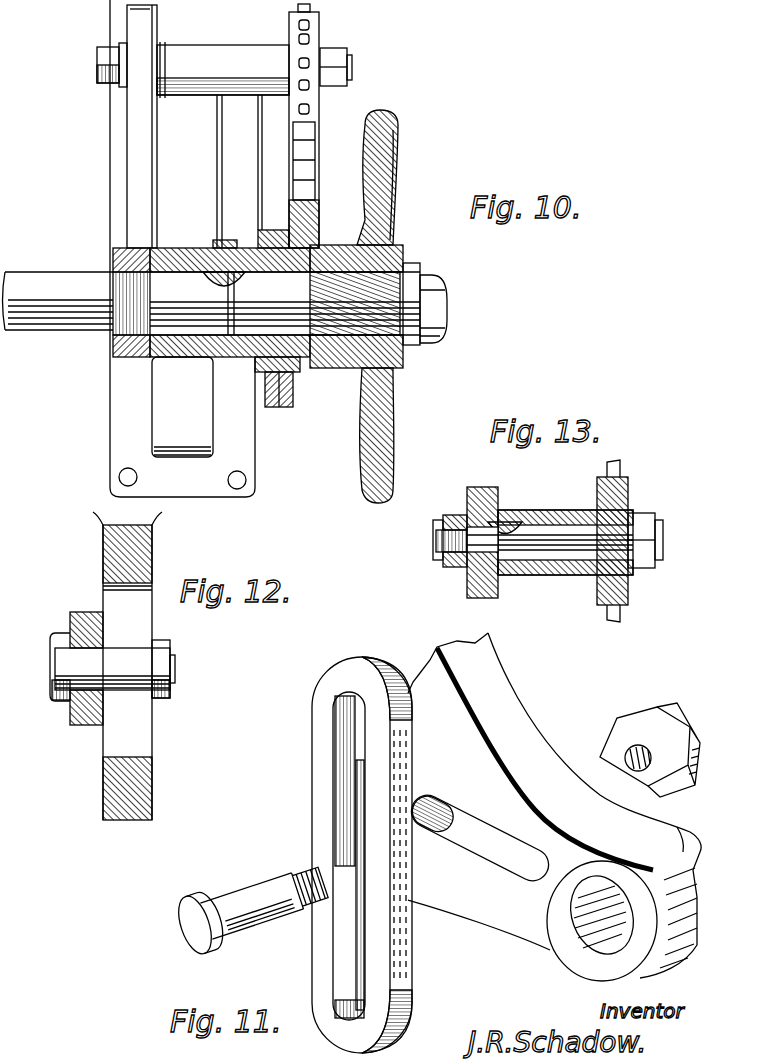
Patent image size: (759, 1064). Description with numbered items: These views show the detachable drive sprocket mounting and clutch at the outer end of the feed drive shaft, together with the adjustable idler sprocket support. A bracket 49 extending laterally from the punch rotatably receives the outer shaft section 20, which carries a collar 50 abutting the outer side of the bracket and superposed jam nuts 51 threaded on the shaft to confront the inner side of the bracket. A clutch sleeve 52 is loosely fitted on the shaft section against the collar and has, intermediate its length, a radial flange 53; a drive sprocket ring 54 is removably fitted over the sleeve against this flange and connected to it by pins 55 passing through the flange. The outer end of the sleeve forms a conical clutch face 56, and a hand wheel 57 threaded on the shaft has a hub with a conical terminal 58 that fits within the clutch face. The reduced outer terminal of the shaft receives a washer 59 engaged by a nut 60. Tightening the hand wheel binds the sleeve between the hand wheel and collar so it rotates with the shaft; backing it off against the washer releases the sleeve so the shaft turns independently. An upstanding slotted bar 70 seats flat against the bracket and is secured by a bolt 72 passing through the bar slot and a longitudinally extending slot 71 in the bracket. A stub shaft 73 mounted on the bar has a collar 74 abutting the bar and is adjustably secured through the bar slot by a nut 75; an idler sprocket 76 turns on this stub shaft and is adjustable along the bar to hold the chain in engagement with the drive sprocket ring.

In FIG. 10, the outer shaft section 20 is at (68, 325).
In FIG. 10, the bracket 49 is at (170, 188).
In FIG. 11, the bracket 49 is at (535, 732).
In FIG. 12, the bracket 49 is at (145, 795).
In FIG. 10, the collar 50 is at (232, 246).
In FIG. 10, the jam nuts 51 is at (140, 345).
In FIG. 10, the clutch sleeve 52 is at (240, 355).
In FIG. 10, the radial flange 53 is at (268, 236).
In FIG. 10, the drive sprocket ring 54 is at (318, 228).
In FIG. 10, the pins 55 is at (277, 240).
In FIG. 10, the conical clutch face 56 is at (325, 375).
In FIG. 10, the hand wheel 57 is at (395, 195).
In FIG. 10, the conical terminal 58 is at (350, 243).
In FIG. 10, the washer 59 is at (410, 270).
In FIG. 10, the nut 60 is at (445, 288).
In FIG. 10, the slotted bar 70 is at (137, 131).
In FIG. 11, the slotted bar 70 is at (322, 725).
In FIG. 12, the slotted bar 70 is at (83, 625).
In FIG. 11, the longitudinally extending slot 71 is at (445, 790).
In FIG. 12, the longitudinally extending slot 71 is at (140, 737).
In FIG. 11, the bolt 72 is at (266, 905).
In FIG. 12, the bolt 72 is at (55, 685).
In FIG. 10, the stub shaft 73 is at (327, 62).
In FIG. 13, the stub shaft 73 is at (548, 530).
In FIG. 10, the collar 74 is at (160, 55).
In FIG. 13, the collar 74 is at (505, 575).
In FIG. 10, the nut 75 is at (103, 53).
In FIG. 13, the nut 75 is at (445, 570).
In FIG. 10, the idler sprocket 76 is at (218, 62).
In FIG. 13, the idler sprocket 76 is at (628, 493).